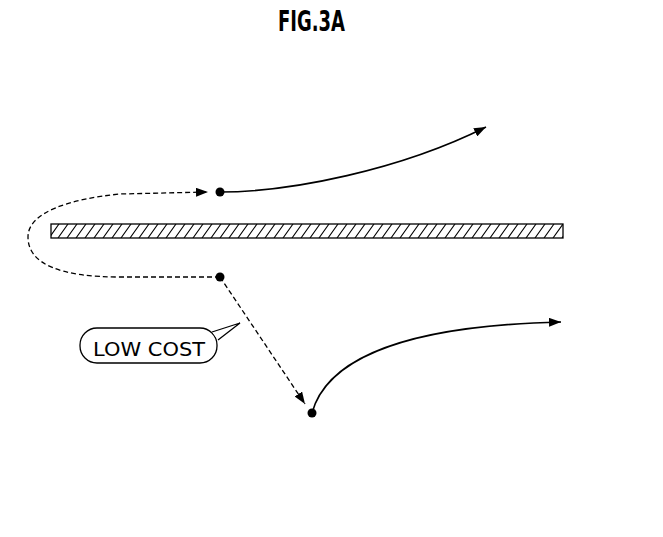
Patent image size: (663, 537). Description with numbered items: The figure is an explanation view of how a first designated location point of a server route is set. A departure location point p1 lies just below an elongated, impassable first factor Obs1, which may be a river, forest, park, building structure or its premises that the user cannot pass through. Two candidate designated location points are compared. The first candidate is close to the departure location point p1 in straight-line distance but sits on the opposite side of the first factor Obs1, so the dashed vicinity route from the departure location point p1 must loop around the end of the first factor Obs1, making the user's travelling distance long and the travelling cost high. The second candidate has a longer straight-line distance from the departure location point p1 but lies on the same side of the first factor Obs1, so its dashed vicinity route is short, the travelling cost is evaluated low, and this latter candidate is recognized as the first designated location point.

The first factor Obs1 is at (499, 226).
The departure location point p1 is at (231, 275).